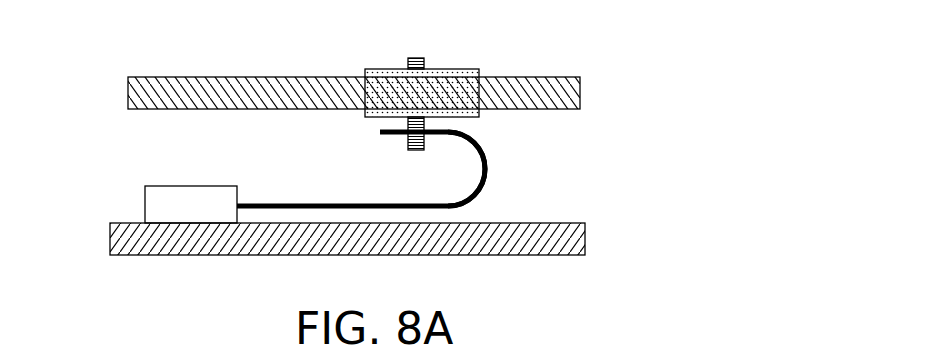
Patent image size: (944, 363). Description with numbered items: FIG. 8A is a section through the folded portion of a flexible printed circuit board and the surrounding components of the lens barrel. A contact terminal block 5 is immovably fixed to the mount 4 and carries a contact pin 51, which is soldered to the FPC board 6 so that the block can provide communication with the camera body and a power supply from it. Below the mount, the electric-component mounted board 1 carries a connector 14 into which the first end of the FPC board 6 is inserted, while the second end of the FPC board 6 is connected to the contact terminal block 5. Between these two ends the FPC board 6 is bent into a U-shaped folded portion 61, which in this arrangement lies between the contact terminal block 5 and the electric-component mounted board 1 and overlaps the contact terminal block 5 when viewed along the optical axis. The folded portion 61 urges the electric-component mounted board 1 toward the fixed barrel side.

The electric-component mounted board 1 is at (568, 240).
The mount 4 is at (572, 80).
The contact terminal block 5 is at (437, 90).
The contact pin 51 is at (408, 148).
The connector 14 is at (175, 202).
The flexible printed circuit board 6 is at (470, 205).
The folded portion 61 is at (486, 165).